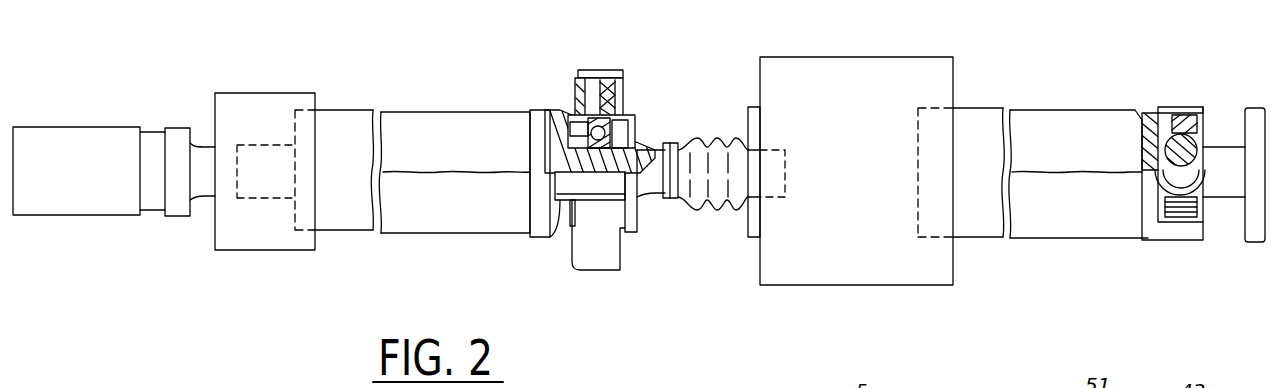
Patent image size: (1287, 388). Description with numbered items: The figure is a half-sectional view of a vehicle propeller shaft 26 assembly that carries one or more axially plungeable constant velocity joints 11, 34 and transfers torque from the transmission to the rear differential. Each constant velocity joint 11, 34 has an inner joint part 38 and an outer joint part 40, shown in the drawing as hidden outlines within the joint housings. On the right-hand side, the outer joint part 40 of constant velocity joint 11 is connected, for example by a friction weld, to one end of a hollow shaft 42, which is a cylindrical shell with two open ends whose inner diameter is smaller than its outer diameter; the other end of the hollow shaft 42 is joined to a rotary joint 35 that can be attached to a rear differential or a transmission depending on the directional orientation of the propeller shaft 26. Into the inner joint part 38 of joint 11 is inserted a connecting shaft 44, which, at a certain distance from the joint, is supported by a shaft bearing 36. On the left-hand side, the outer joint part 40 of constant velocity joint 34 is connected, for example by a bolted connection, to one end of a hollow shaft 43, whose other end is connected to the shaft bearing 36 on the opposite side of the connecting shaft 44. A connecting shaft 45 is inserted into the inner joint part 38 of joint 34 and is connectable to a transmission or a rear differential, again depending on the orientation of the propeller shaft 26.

The constant velocity joint 11 is at (914, 58).
The propeller shaft 26 is at (468, 58).
The constant velocity joint 34 is at (253, 91).
The rotary joint 35 is at (1185, 251).
The shaft bearing 36 is at (600, 63).
The inner joint part 38 is at (240, 145).
The outer joint part 40 is at (293, 173).
The hollow shaft 42 is at (1084, 110).
The hollow shaft 43 is at (445, 110).
The connecting shaft 44 is at (643, 150).
The connecting shaft 45 is at (185, 128).